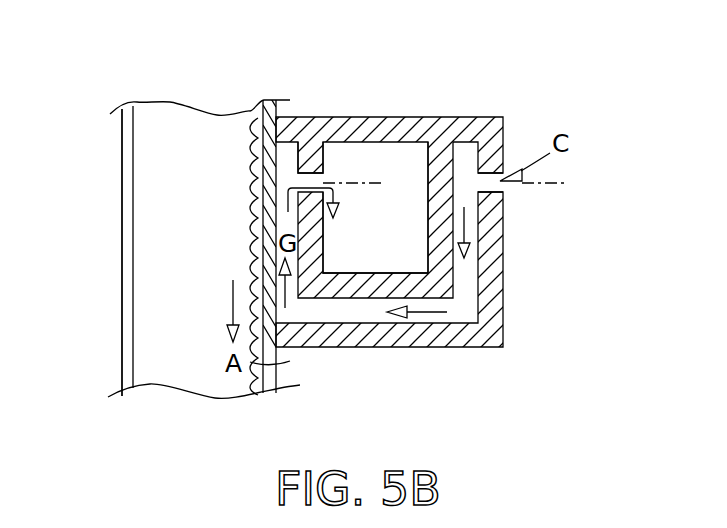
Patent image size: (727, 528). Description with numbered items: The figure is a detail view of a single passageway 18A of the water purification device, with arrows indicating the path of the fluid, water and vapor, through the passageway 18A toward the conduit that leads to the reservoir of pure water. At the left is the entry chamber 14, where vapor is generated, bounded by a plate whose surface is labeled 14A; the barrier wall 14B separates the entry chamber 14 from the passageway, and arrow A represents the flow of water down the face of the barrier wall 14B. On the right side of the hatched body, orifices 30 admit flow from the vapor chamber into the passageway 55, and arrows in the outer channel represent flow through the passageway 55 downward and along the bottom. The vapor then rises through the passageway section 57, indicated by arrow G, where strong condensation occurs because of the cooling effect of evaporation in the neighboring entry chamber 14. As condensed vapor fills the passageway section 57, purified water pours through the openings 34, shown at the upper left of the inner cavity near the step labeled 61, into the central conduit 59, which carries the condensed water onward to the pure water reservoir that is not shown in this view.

The entry chamber 14 is at (192, 337).
The outer surface of plate 14A is at (120, 222).
The barrier wall 14B is at (268, 250).
The passageway 18A is at (338, 118).
The orifices 30 is at (503, 188).
The openings 34 is at (323, 180).
The passageway 55 is at (373, 313).
The passageway section 57 is at (283, 181).
The central conduit 59 is at (398, 253).
The step / notch 61 is at (308, 142).